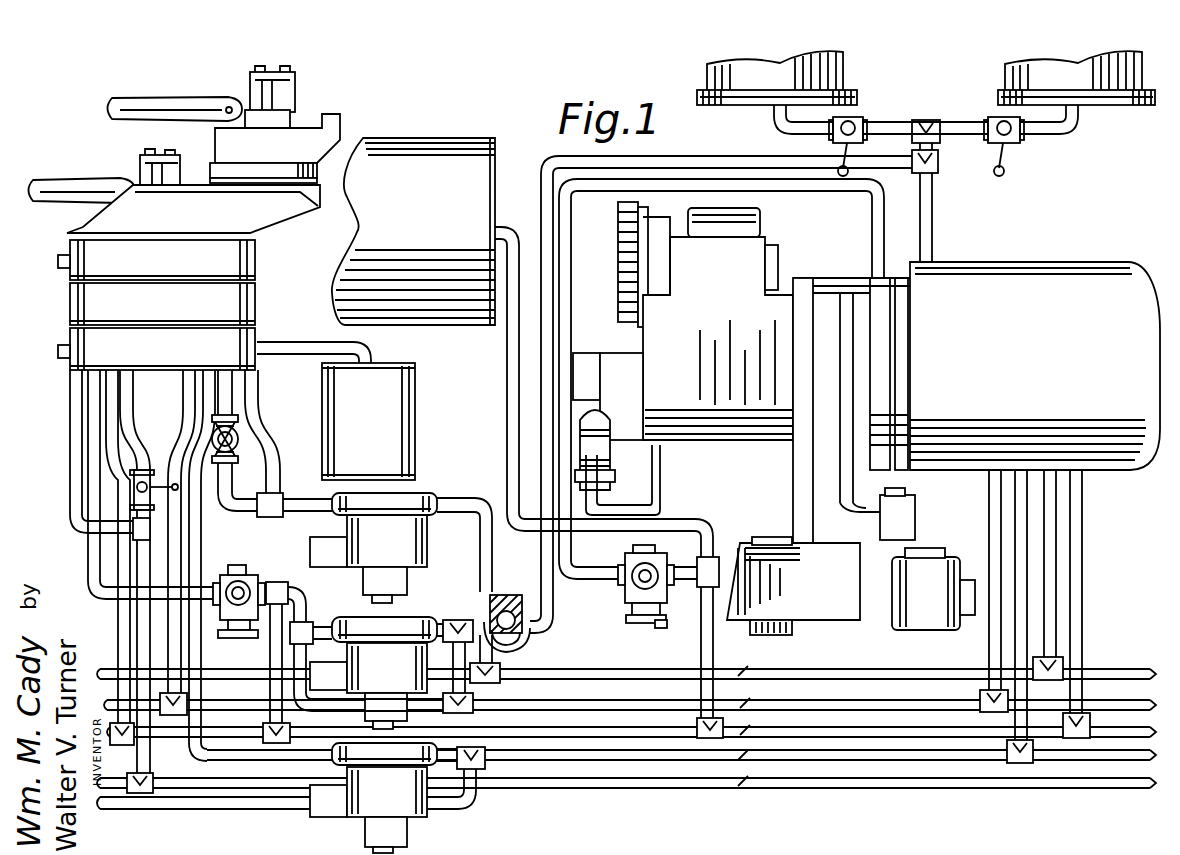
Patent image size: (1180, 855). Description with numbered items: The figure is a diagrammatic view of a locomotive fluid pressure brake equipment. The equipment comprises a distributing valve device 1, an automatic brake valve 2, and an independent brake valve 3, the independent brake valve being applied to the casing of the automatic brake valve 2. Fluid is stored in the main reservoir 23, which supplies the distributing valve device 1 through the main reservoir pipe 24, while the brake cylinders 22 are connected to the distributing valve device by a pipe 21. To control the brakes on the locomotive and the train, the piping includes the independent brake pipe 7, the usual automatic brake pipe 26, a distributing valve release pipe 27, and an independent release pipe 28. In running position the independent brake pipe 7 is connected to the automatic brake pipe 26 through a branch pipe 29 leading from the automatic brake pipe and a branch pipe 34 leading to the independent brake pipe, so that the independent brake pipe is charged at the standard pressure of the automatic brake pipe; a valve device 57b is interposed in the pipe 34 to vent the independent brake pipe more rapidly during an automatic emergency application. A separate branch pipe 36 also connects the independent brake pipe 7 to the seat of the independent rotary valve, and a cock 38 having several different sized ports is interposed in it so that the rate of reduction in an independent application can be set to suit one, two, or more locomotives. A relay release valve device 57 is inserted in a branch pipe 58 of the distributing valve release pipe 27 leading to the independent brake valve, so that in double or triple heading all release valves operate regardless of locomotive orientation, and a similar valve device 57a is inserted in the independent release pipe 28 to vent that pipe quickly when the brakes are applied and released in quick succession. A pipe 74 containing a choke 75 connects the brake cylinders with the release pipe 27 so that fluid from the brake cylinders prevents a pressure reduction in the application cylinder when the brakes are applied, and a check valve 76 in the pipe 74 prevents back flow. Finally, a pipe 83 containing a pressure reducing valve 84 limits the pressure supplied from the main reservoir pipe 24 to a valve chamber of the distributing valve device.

The distributing valve device 1 is at (968, 268).
The automatic brake valve 2 is at (83, 226).
The independent brake valve 3 is at (280, 140).
The independent brake pipe 7 is at (1097, 667).
The pipe 21 is at (927, 224).
The brake cylinders 22 is at (1022, 70).
The main reservoir 23 is at (458, 145).
The main reservoir pipe 24 is at (112, 412).
The automatic brake pipe 26 is at (138, 441).
The distributing valve release pipe 27 is at (591, 702).
The independent release pipe 28 is at (207, 412).
The branch pipe 29 is at (72, 448).
The branch pipe 34 is at (270, 463).
The branch pipe 36 is at (228, 397).
The cock 38 is at (238, 428).
The relay release valve device 57 is at (383, 632).
The valve device 57a is at (412, 751).
The valve device 57b is at (400, 503).
The branch pipe 58 is at (188, 385).
The pipe 74 is at (733, 151).
The choke 75 is at (522, 643).
The check valve 76 is at (508, 596).
The pipe 83 is at (607, 189).
The pressure reducing valve 84 is at (630, 563).